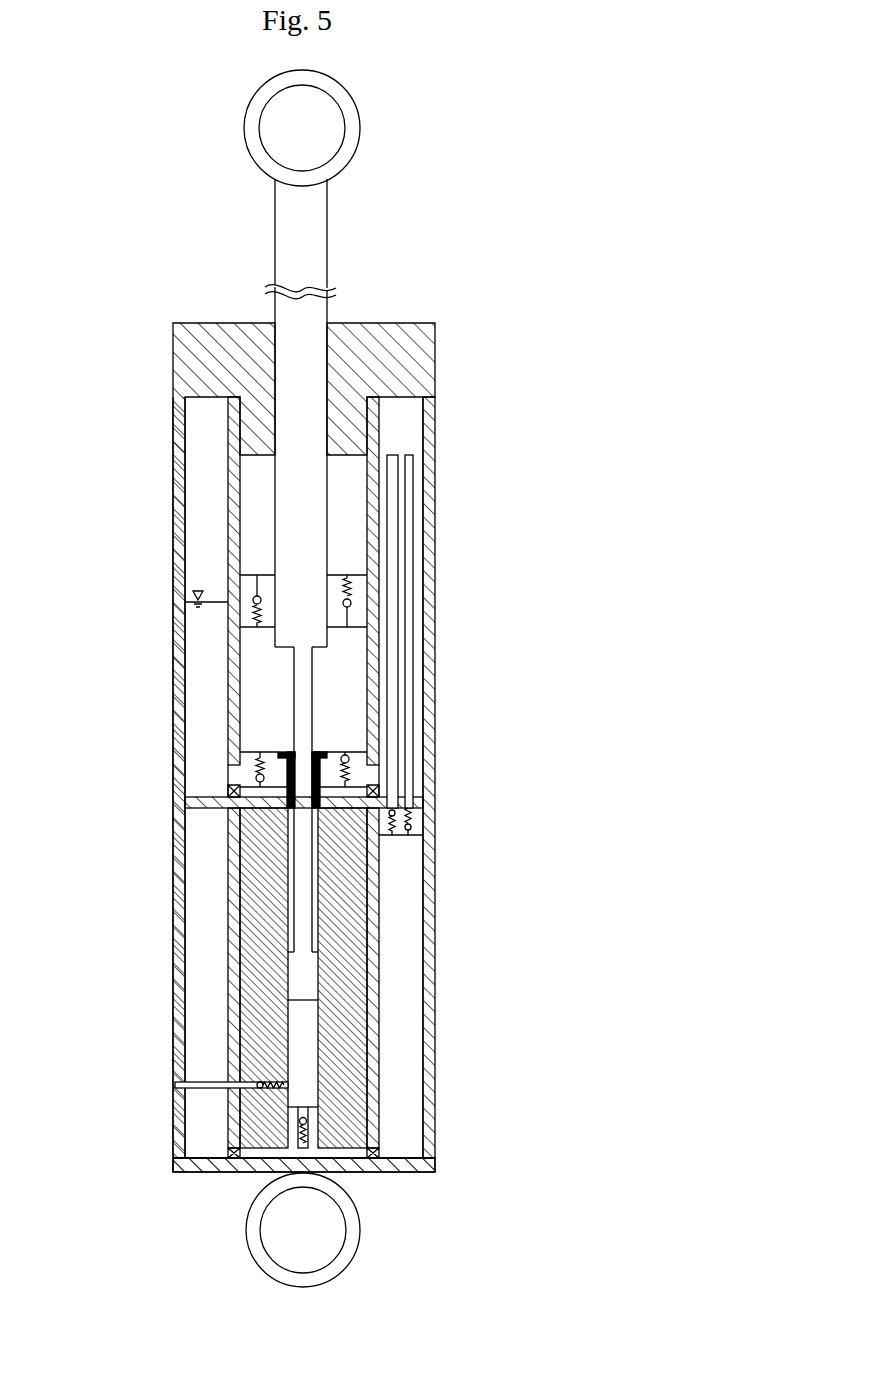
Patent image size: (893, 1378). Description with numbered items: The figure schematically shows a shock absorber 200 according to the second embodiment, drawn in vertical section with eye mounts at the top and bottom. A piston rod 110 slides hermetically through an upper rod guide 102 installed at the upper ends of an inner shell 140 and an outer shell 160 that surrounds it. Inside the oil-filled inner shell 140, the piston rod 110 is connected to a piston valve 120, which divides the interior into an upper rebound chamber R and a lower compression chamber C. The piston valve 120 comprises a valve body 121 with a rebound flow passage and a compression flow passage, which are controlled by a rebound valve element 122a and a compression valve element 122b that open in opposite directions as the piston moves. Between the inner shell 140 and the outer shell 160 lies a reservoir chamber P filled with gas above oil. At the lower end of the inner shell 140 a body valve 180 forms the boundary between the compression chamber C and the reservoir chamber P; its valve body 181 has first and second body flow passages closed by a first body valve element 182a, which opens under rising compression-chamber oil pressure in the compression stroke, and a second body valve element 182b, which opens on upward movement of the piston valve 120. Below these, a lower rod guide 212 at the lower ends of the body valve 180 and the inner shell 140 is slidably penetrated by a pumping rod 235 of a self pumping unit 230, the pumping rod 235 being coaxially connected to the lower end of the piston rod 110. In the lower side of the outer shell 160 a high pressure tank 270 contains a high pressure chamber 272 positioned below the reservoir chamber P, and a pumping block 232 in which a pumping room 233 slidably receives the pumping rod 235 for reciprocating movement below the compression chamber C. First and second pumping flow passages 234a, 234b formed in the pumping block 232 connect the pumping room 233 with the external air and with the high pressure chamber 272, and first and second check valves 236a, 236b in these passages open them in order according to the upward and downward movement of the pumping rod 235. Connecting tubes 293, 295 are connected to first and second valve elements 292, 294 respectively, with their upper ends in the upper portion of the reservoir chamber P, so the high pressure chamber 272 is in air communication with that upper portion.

The shock absorber 200 is at (462, 184).
The piston rod 110 is at (322, 229).
The upper rod guide 102 is at (434, 350).
The inner shell 140 is at (370, 397).
The rebound chamber R is at (352, 470).
The outer shell 160 is at (434, 478).
The reservoir chamber P is at (209, 431).
The piston valve 120 is at (259, 565).
The valve body 121 is at (340, 576).
The connecting tube 295 is at (393, 556).
The connecting tube 293 is at (409, 607).
The compression chamber C is at (269, 685).
The lower rod guide 212 is at (321, 752).
The rebound valve element 122a is at (258, 624).
The compression valve element 122b is at (345, 632).
The body valve 180 is at (259, 742).
The valve body 181 is at (248, 762).
The first body valve element 182a is at (349, 760).
The second body valve element 182b is at (256, 778).
The first valve element 292 is at (411, 826).
The pumping block 232 is at (246, 855).
The second valve element 294 is at (403, 836).
The pumping rod 235 is at (303, 893).
The self pumping unit 230 is at (240, 962).
The high pressure tank 270 is at (432, 990).
The pumping room 233 is at (304, 1014).
The high pressure chamber 272 is at (405, 1054).
The first pumping flow passage 234a is at (201, 1083).
The first check valve 236a is at (260, 1097).
The second pumping flow passage 234b is at (308, 1108).
The second check valve 236b is at (310, 1112).